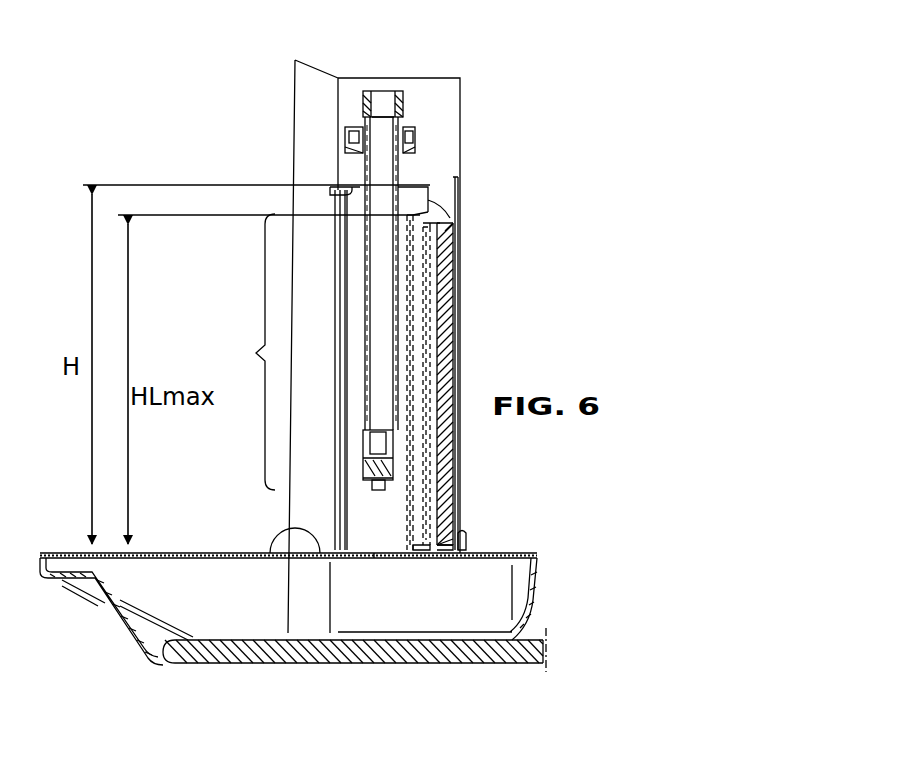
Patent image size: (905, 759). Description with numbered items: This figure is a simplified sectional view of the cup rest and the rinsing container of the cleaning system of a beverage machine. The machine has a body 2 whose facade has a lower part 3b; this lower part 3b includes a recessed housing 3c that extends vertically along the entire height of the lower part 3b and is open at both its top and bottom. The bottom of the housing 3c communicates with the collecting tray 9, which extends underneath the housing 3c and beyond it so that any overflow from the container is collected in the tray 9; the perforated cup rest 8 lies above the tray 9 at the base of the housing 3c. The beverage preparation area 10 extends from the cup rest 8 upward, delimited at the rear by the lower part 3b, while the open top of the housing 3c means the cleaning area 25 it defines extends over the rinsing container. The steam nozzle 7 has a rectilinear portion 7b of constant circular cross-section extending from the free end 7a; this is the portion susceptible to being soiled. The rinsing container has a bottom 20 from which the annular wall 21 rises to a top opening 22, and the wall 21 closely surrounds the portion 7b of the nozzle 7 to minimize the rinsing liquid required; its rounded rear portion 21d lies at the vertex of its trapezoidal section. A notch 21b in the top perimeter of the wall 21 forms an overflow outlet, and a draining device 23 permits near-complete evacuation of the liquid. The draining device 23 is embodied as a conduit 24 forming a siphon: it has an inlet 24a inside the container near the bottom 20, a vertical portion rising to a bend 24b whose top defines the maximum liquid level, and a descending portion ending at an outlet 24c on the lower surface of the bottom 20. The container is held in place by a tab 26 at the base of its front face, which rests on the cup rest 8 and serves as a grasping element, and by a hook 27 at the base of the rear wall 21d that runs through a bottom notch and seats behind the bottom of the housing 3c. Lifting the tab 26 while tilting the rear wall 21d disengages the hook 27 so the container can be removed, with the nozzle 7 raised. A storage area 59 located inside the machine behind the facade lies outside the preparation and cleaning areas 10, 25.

The body 2 is at (508, 650).
The lower part of the facade 3b is at (313, 136).
The recessed housing 3c is at (440, 108).
The steam nozzle 7 is at (363, 118).
The free end 7a is at (383, 486).
The rectilinear portion of the nozzle 7b is at (248, 352).
The cup rest 8 is at (55, 553).
The collecting tray 9 is at (122, 630).
The beverage preparation area 10 is at (207, 170).
The bottom 20 is at (374, 558).
The annular wall 21 is at (384, 368).
The notch 21b is at (437, 187).
The rear portion of the annular wall 21d is at (430, 308).
The top opening 22 is at (333, 185).
The draining device 23 is at (418, 212).
The conduit 24 is at (420, 360).
The inlet 24a is at (418, 553).
The bend 24b is at (425, 224).
The outlet 24c is at (432, 543).
The cleaning area 25 is at (416, 77).
The tab 26 is at (290, 556).
The hook 27 is at (465, 548).
The storage area 59 is at (502, 95).